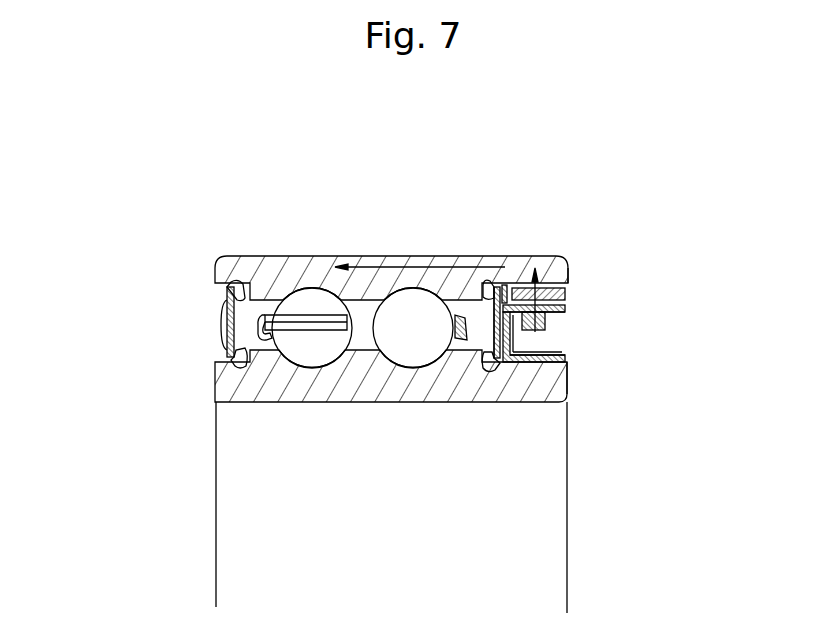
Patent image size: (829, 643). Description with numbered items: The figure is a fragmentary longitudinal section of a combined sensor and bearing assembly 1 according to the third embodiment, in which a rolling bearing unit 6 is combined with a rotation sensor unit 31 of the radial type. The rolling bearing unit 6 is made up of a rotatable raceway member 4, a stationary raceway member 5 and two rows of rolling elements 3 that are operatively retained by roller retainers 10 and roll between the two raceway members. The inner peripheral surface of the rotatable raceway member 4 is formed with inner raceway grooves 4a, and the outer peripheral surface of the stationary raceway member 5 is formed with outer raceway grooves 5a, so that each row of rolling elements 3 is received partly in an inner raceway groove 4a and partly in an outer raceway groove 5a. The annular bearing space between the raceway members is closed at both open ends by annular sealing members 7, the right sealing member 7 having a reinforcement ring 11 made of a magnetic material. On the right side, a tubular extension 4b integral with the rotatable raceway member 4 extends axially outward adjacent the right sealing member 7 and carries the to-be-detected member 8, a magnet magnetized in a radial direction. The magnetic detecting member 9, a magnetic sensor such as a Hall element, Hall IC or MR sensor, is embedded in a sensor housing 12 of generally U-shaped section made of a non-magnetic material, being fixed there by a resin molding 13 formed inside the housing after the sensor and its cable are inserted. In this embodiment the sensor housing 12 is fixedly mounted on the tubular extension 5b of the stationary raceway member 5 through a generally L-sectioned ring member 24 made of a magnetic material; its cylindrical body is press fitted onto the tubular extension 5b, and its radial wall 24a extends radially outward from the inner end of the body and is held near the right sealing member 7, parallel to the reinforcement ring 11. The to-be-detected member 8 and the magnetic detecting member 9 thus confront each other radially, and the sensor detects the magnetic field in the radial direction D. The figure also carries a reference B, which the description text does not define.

The combined sensor and bearing assembly 1 is at (188, 197).
The rolling elements 3 is at (325, 296).
The rotatable raceway member 4 is at (258, 277).
The inner raceway grooves 4a is at (318, 296).
The tubular extension 4b is at (550, 262).
The stationary raceway member 5 is at (245, 393).
The outer raceway grooves 5a is at (303, 358).
The tubular extension 5b is at (568, 387).
The rolling bearing unit 6 is at (432, 145).
The annular sealing members 7 is at (223, 315).
The to-be-detected member 8 is at (565, 293).
The magnetic detecting member 9 is at (547, 325).
The roller retainers 10 is at (225, 347).
The reinforcement ring 11 is at (498, 290).
The sensor housing 12 is at (565, 310).
The resin molding 13 is at (565, 340).
The L-sectioned ring member 24 is at (565, 358).
The radial wall 24a is at (510, 292).
The rotation sensor unit 31 is at (726, 273).
The direction B is at (420, 247).
The direction D is at (537, 277).